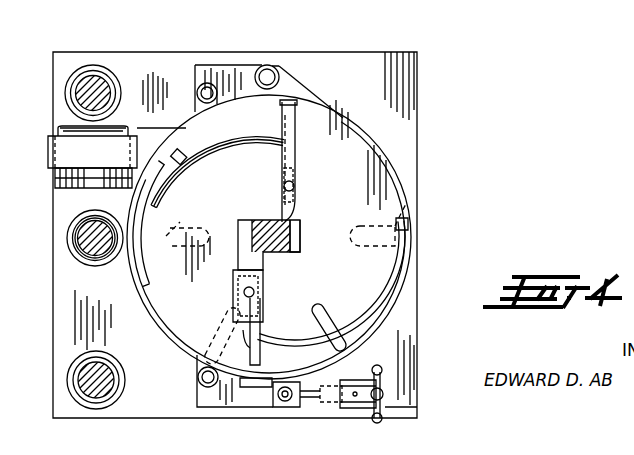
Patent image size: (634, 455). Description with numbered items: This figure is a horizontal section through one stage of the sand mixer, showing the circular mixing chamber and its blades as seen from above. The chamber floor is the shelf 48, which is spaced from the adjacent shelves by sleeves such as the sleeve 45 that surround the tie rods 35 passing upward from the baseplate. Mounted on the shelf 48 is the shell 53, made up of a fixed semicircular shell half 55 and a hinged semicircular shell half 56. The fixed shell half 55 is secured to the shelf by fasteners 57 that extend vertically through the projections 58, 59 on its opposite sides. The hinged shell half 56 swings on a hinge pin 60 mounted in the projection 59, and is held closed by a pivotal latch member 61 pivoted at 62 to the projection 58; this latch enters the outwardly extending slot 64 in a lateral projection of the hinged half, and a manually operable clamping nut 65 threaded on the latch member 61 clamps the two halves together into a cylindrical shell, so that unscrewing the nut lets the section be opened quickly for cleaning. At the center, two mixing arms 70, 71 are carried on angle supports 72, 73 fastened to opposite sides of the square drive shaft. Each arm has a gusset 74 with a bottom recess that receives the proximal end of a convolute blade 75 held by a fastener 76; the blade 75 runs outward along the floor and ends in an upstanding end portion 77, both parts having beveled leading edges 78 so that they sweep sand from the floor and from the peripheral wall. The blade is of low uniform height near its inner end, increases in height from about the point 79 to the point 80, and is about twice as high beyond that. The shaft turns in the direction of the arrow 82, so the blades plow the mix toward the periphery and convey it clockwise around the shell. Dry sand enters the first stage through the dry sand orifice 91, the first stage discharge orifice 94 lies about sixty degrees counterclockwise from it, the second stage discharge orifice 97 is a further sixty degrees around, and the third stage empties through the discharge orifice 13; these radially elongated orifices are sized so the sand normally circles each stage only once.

The discharge orifice 13 is at (410, 211).
The tie rods 35 is at (78, 230).
The sleeve 45 is at (72, 256).
The shelf 48 is at (398, 110).
The shell 53 is at (396, 152).
The fixed semicircular shell half 55 is at (148, 300).
The hinged semicircular shell half 56 is at (405, 188).
The fasteners 57 is at (205, 83).
The projection 58 is at (222, 408).
The projection 59 is at (238, 66).
The hinge pin 60 is at (268, 70).
The pivotal latch member 61 is at (310, 398).
The pivot 62 is at (285, 402).
The slot 64 is at (334, 404).
The clamping nut 65 is at (388, 394).
The mixing arm 70 is at (182, 153).
The mixing arm 71 is at (392, 290).
The angle support 72 is at (300, 234).
The angle support 73 is at (238, 226).
The gusset 74 is at (263, 292).
The blade 75 is at (258, 340).
The fastener 76 is at (244, 292).
The upstanding end portion 77 is at (262, 377).
The beveled leading edges 78 is at (292, 152).
The point 79 is at (296, 332).
The point 80 is at (401, 290).
The arrow 82 is at (330, 132).
The dry sand orifice 91 is at (172, 226).
The first stage discharge orifice 94 is at (202, 332).
The second stage discharge orifice 97 is at (318, 320).